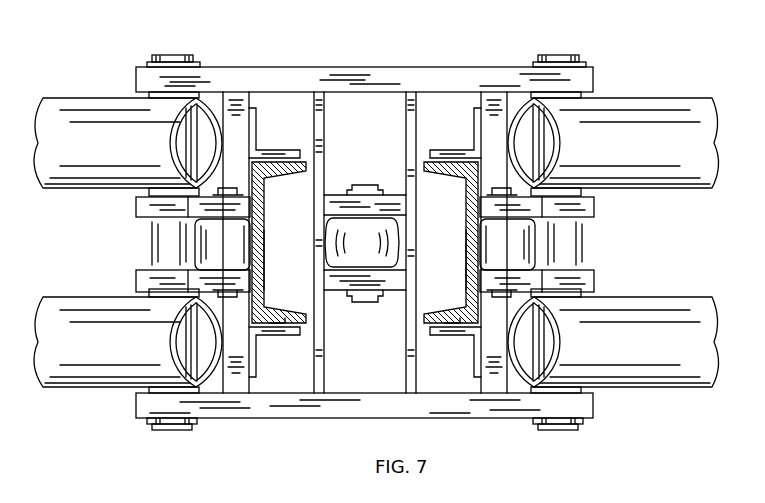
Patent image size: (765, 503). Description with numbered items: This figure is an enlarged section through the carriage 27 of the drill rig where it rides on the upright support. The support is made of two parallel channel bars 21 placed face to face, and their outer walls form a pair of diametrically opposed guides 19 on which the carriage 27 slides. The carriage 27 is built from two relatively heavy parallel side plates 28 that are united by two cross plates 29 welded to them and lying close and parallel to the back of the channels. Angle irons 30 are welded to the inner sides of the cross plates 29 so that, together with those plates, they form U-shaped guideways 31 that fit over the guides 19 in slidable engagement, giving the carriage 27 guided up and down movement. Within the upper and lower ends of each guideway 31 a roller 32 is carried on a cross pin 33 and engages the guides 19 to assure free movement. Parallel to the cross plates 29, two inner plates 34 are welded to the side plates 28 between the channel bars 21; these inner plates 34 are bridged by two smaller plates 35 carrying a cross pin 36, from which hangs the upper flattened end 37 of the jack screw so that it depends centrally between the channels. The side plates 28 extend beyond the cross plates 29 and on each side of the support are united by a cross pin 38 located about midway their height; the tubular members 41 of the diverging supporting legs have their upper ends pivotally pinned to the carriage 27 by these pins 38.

The guides 19 is at (284, 306).
The channel bars 21 is at (263, 258).
The carriage 27 is at (437, 55).
The side plates 28 is at (343, 80).
The cross plates 29 is at (238, 110).
The angle irons 30 is at (253, 147).
The U-shaped guideways 31 is at (264, 187).
The roller 32 is at (365, 244).
The cross pin 33 is at (228, 187).
The inner plates 34 is at (410, 130).
The smaller plates 35 is at (330, 200).
The cross pin 36 is at (360, 185).
The upper flattened end 37 is at (362, 242).
The cross pin 38 is at (168, 431).
The tubular members 41 is at (376, 242).